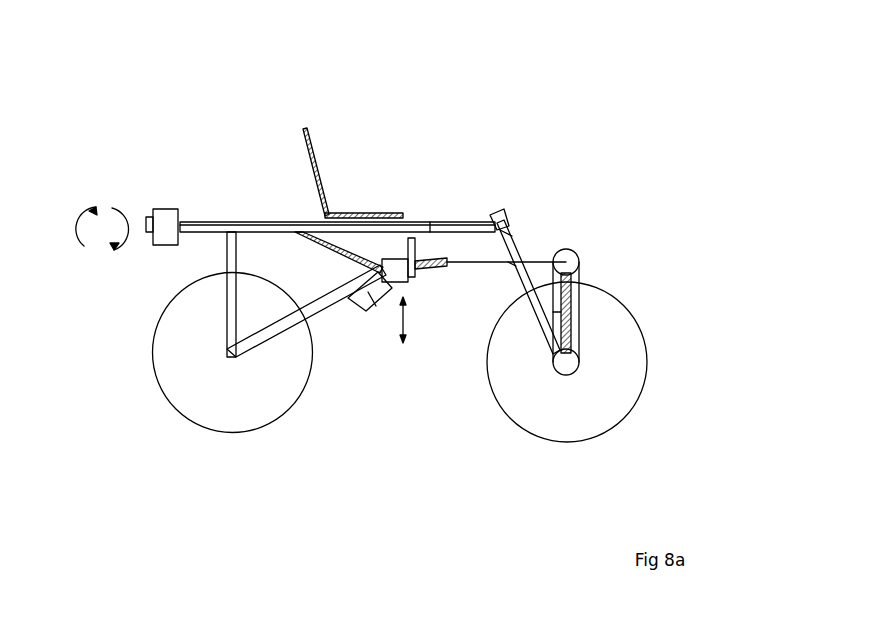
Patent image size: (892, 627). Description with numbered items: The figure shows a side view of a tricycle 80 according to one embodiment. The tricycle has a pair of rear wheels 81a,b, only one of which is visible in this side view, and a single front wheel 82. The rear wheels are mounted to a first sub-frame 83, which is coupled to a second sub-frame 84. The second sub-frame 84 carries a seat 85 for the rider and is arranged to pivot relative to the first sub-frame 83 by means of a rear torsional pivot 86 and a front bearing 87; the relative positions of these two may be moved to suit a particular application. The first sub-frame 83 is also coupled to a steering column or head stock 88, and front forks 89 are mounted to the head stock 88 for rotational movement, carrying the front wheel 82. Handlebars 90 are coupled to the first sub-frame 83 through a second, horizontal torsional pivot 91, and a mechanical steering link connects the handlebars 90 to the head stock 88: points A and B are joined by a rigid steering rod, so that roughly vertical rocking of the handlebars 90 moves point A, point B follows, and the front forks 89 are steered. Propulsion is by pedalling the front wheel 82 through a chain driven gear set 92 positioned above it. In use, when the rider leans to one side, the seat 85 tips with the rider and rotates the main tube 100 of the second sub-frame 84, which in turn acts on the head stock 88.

The tricycle 80 is at (447, 117).
The rear wheels 81a,b is at (160, 385).
The front wheel 82 is at (647, 377).
The first sub-frame 83 is at (250, 223).
The second sub-frame 84 is at (477, 222).
The seat 85 is at (305, 130).
The rear torsional pivot 86 is at (163, 209).
The front bearing 87 is at (322, 235).
The head stock 88 is at (510, 241).
The front forks 89 is at (556, 312).
The handlebars 90 is at (441, 272).
The second torsional pivot 91 is at (378, 313).
The chain driven gear set 92 is at (580, 260).
The main tube 100 is at (455, 222).
The point A is at (378, 313).
The point B is at (514, 265).